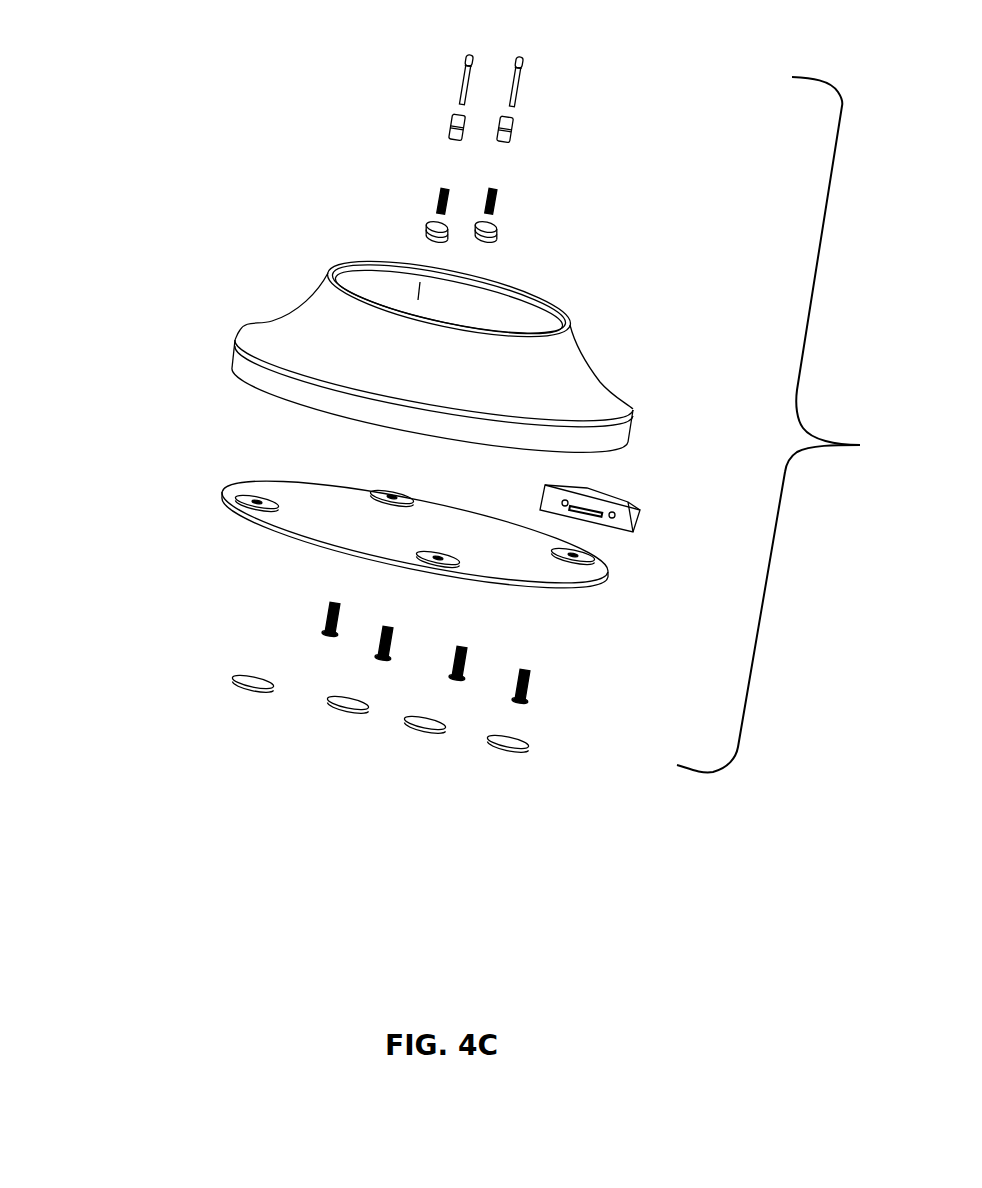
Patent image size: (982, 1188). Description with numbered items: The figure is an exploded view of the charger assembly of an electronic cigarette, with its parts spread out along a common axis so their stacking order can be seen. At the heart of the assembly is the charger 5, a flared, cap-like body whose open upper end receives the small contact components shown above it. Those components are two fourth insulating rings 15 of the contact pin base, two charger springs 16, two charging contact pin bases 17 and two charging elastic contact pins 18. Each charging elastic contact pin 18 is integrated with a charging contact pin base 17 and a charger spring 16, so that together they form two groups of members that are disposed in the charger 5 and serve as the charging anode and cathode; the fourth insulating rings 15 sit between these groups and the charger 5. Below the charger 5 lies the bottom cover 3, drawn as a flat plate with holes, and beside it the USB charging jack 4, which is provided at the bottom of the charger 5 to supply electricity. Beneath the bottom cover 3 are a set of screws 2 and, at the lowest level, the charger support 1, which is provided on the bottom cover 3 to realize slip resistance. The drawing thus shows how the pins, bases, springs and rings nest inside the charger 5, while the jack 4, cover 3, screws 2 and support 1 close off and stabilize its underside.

The charger support 1 is at (493, 745).
The screw 2 is at (510, 700).
The bottom cover 3 is at (225, 507).
The USB charging jack 4 is at (640, 520).
The charger 5 is at (230, 353).
The fourth insulating ring 15 is at (473, 243).
The charger spring 16 is at (459, 189).
The charging contact pin base 17 is at (476, 117).
The charging elastic contact pin 18 is at (486, 56).